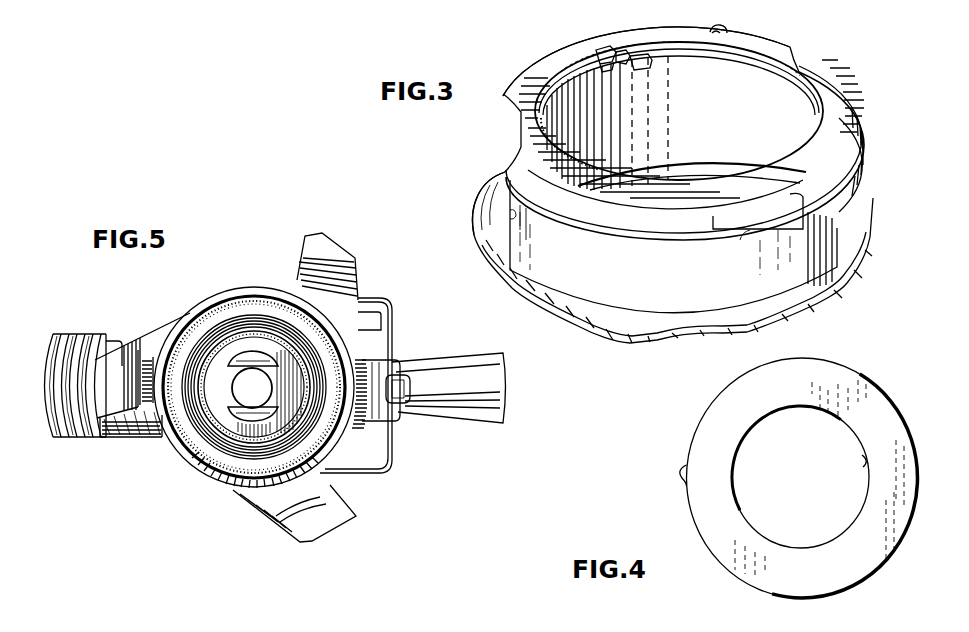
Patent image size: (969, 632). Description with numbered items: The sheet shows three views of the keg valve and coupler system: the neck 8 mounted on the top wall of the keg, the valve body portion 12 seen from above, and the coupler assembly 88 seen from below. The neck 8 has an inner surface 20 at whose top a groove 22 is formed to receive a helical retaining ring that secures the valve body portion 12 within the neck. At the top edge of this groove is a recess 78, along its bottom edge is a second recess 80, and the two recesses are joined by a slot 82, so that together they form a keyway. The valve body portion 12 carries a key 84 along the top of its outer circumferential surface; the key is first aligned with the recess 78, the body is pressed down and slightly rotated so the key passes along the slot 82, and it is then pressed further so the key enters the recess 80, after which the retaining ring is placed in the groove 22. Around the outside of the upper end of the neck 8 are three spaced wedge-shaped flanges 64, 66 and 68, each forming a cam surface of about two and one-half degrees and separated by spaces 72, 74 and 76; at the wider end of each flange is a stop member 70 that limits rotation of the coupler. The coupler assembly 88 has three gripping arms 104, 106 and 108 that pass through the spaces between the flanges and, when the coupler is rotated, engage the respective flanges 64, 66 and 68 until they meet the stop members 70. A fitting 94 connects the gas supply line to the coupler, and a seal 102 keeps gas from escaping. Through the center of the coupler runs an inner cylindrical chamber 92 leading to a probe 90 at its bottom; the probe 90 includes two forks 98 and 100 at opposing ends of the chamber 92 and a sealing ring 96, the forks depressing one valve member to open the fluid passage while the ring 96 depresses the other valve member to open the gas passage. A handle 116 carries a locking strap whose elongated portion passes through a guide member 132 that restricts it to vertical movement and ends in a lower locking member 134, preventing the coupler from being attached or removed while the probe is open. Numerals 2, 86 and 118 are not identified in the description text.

In FIG. 3, the base flange 2 is at (520, 284).
In FIG. 3, the neck 8 is at (659, 287).
In FIG. 4, the valve body portion 12 is at (780, 400).
In FIG. 3, the inner surface 20 is at (694, 123).
In FIG. 3, the groove 22 is at (665, 56).
In FIG. 3, the flange 64 is at (550, 68).
In FIG. 3, the flange 66 is at (856, 114).
In FIG. 3, the flange 68 is at (504, 188).
In FIG. 3, the stop member 70 is at (510, 212).
In FIG. 3, the space 72 is at (752, 51).
In FIG. 3, the space 74 is at (755, 216).
In FIG. 3, the space 76 is at (520, 132).
In FIG. 3, the recess 78 is at (600, 50).
In FIG. 3, the second recess 80 is at (638, 56).
In FIG. 3, the slot 82 is at (618, 52).
In FIG. 4, the key 84 is at (681, 472).
In FIG. 4, the inner notch of washer 86 is at (865, 462).
In FIG. 5, the coupler assembly 88 is at (188, 294).
In FIG. 5, the probe 90 is at (245, 345).
In FIG. 5, the inner cylindrical chamber 92 is at (261, 399).
In FIG. 5, the fitting 94 is at (94, 334).
In FIG. 5, the sealing ring 96 is at (225, 436).
In FIG. 5, the fork 98 is at (280, 357).
In FIG. 5, the fork 100 is at (236, 412).
In FIG. 5, the seal 102 is at (270, 300).
In FIG. 5, the gripping arm 104 is at (338, 262).
In FIG. 5, the gripping arm 106 is at (356, 520).
In FIG. 5, the gripping arm 108 is at (109, 366).
In FIG. 5, the handle 116 is at (478, 355).
In FIG. 5, the valve body 118 is at (392, 462).
In FIG. 5, the guide member 132 is at (400, 420).
In FIG. 5, the lower locking member 134 is at (412, 392).